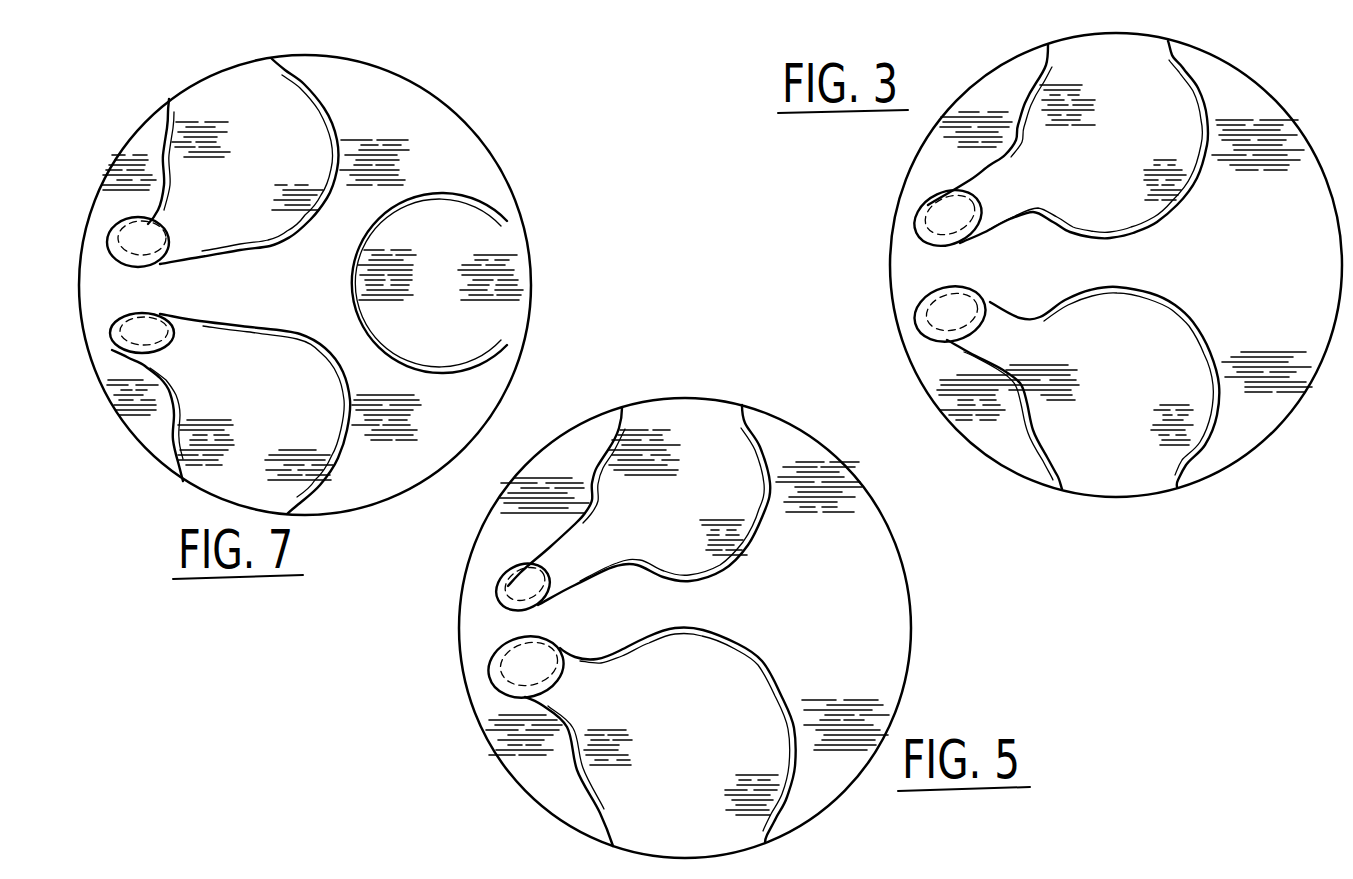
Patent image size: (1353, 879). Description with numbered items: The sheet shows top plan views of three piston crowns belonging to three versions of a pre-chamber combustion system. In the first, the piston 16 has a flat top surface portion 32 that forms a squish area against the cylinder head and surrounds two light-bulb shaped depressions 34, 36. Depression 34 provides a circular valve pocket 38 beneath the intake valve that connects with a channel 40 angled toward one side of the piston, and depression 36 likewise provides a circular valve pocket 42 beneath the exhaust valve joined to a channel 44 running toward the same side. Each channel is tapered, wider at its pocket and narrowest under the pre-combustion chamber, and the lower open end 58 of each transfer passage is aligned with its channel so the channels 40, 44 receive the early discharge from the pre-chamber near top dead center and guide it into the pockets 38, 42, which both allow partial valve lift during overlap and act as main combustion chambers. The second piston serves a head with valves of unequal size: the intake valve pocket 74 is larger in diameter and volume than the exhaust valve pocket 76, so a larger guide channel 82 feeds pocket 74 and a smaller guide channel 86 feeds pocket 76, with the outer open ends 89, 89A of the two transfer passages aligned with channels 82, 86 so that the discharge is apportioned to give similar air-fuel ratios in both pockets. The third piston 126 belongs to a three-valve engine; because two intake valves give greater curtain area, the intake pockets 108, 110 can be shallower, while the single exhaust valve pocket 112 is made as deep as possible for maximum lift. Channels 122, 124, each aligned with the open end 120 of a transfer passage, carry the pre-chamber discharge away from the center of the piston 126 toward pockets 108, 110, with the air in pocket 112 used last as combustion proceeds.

In FIG. 3, the piston 16 is at (1086, 294).
In FIG. 3, the flat top surface portion 32 is at (1312, 333).
In FIG. 3, the depression 34 is at (1146, 393).
In FIG. 3, the depression 36 is at (1120, 153).
In FIG. 3, the circular valve pocket 38 is at (1183, 317).
In FIG. 3, the channel 40 is at (1033, 320).
In FIG. 3, the circular valve pocket 42 is at (1183, 197).
In FIG. 3, the channel 44 is at (1003, 161).
In FIG. 3, the lower open end 58 is at (920, 200).
In FIG. 5, the valve pocket 74 is at (773, 673).
In FIG. 5, the valve pocket 76 is at (757, 537).
In FIG. 5, the guide channel 82 is at (520, 660).
In FIG. 5, the guide channel 86 is at (562, 537).
In FIG. 5, the outer open end 89 is at (495, 661).
In FIG. 5, the outer open end 89A is at (500, 594).
In FIG. 7, the pocket 108 is at (309, 96).
In FIG. 7, the pocket 110 is at (325, 356).
In FIG. 7, the exhaust valve pocket 112 is at (443, 198).
In FIG. 7, the lower open end 120 is at (127, 231).
In FIG. 7, the channel 122 is at (202, 325).
In FIG. 7, the channel 124 is at (187, 262).
In FIG. 7, the piston 126 is at (512, 174).